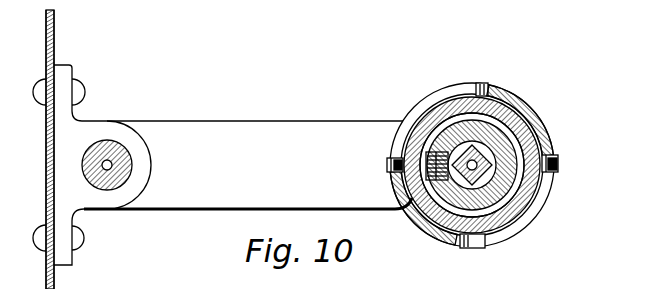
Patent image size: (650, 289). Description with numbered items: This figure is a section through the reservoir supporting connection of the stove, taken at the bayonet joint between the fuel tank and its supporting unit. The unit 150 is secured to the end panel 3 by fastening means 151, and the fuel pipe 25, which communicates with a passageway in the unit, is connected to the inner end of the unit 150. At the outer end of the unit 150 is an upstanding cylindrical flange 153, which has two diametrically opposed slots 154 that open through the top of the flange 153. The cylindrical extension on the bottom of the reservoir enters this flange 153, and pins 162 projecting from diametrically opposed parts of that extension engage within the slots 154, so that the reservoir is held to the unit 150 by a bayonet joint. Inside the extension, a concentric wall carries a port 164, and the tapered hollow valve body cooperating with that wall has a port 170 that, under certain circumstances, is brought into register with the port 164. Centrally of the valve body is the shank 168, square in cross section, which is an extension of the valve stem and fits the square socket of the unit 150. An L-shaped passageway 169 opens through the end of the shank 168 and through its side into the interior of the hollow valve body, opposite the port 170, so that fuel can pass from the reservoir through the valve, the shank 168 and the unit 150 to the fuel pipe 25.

The end panel 3 is at (55, 30).
The fuel pipe 25 is at (116, 142).
The unit 150 is at (292, 130).
The fastening means 151 is at (84, 238).
The upstanding cylindrical flange 153 is at (547, 132).
The slots 154 is at (448, 87).
The pins 162 is at (387, 164).
The port 164 is at (418, 148).
The shank 168 is at (482, 180).
The L-shaped passageway 169 is at (483, 152).
The port 170 is at (421, 215).